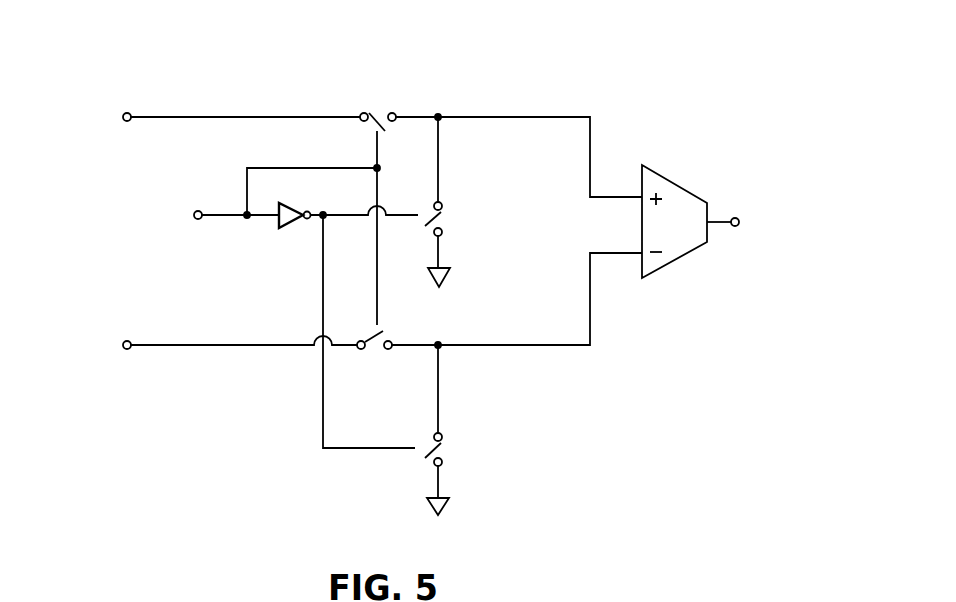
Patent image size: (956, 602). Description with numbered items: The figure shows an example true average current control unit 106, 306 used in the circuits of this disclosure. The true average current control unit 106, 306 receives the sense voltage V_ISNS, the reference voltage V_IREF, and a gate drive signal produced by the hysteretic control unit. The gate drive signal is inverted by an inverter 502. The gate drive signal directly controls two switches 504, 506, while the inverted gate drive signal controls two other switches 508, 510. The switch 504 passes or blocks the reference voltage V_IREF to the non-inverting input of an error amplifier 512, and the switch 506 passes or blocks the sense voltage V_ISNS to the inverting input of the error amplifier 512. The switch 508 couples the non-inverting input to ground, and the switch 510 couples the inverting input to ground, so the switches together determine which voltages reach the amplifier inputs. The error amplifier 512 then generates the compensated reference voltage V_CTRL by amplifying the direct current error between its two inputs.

The true average current control unit 106 is at (432, 257).
The true average current control unit 306 is at (596, 66).
The inverter 502 is at (288, 229).
The switch 504 is at (376, 111).
The switch 506 is at (372, 338).
The switch 508 is at (441, 214).
The switch 510 is at (441, 443).
The error amplifier 512 is at (672, 262).